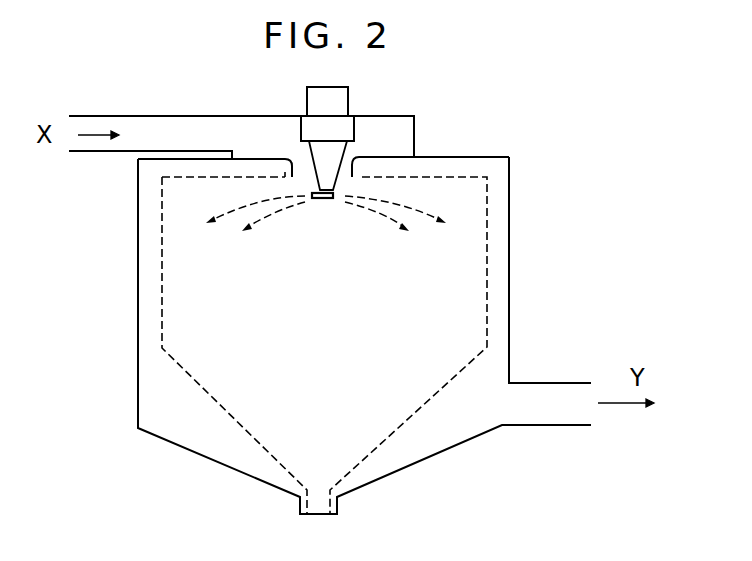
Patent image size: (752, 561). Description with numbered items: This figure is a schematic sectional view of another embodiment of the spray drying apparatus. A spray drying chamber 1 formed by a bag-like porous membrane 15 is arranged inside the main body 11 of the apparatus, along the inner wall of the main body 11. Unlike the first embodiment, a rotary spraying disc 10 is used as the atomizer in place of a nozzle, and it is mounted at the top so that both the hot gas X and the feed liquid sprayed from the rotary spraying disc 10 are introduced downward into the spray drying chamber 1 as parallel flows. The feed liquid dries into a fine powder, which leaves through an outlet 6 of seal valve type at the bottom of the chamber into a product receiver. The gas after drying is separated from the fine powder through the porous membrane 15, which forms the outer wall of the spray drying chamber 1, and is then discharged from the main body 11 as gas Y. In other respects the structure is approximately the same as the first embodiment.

The spray drying chamber 1 is at (183, 299).
The outlet 6 is at (338, 506).
The rotary spraying disc 10 is at (332, 185).
The main body 11 is at (509, 224).
The porous membrane 15 is at (487, 294).